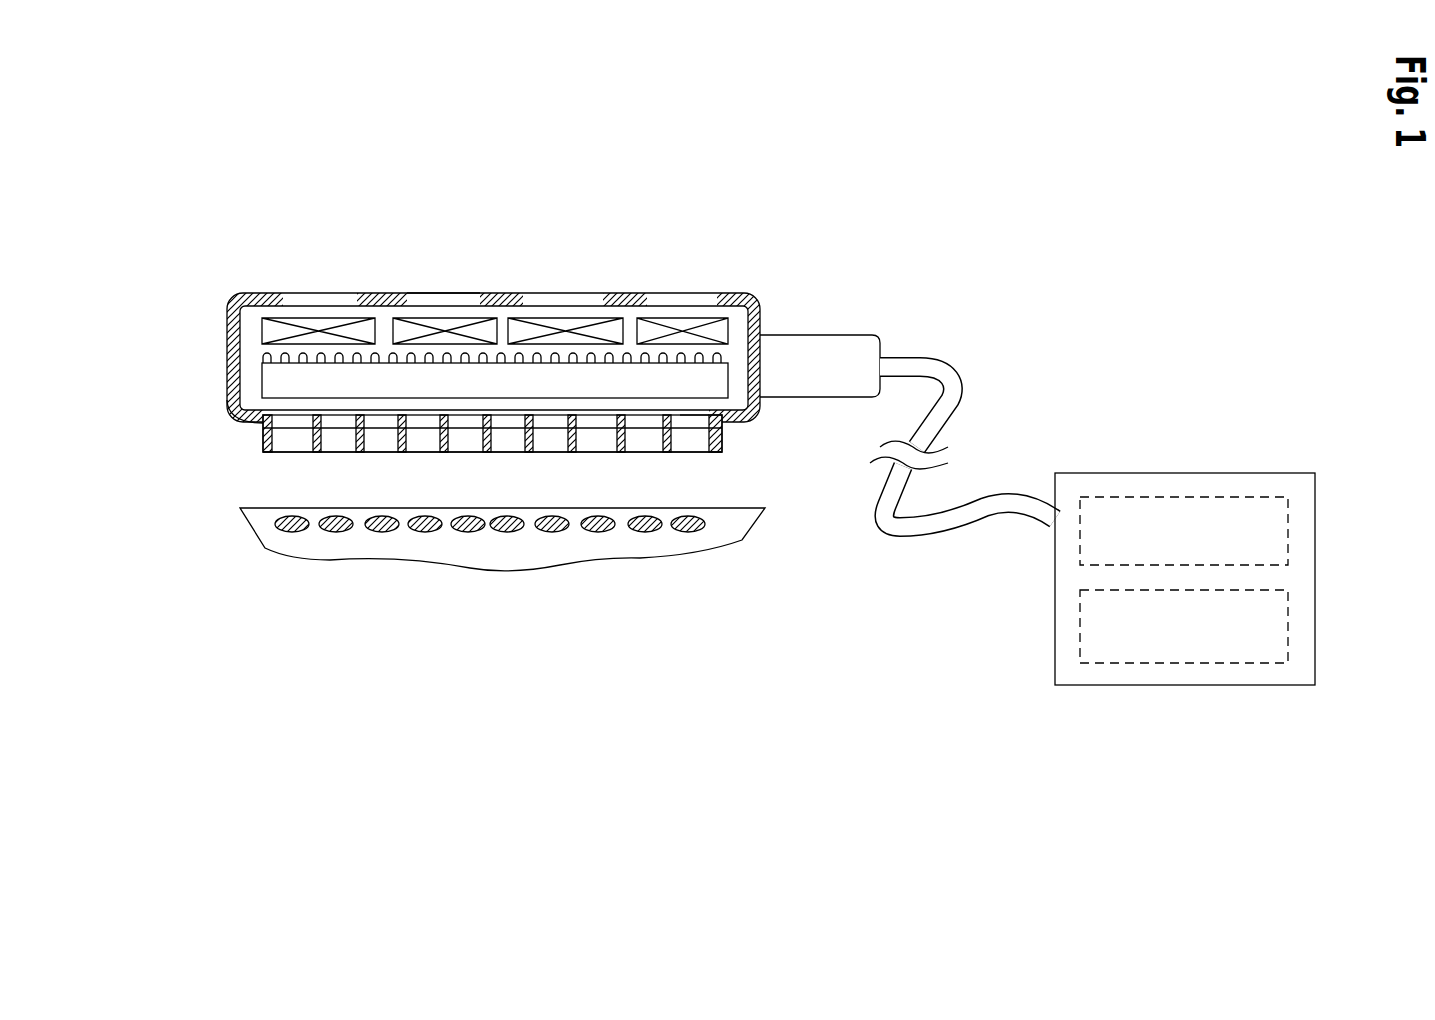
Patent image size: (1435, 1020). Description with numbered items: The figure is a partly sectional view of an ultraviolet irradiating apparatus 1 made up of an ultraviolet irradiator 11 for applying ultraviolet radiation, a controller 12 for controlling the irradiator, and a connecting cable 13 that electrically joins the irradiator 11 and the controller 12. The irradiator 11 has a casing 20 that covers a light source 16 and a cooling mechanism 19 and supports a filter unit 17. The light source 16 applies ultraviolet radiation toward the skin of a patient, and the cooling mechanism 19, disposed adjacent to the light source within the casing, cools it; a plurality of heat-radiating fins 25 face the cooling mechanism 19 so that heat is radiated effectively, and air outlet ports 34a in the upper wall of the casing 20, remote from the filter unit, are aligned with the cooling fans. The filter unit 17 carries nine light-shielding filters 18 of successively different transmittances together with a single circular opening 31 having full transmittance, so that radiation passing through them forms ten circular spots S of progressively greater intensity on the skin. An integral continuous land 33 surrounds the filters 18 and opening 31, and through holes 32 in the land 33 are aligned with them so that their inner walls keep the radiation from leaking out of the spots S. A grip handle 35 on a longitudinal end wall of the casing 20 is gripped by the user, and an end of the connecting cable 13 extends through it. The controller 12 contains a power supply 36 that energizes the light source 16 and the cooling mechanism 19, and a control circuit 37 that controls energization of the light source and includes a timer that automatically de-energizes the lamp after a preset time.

The ultraviolet irradiating apparatus 1 is at (1162, 833).
The ultraviolet irradiator 11 is at (737, 247).
The controller 12 is at (1190, 470).
The connecting cable 13 is at (950, 385).
The light source 16 is at (290, 383).
The filter unit 17 is at (235, 420).
The light-shielding filters 18 is at (510, 430).
The cooling mechanism 19 is at (574, 323).
The casing 20 is at (227, 318).
The heat-radiating fins 25 is at (742, 358).
The opening 31 is at (695, 428).
The through holes 32 is at (350, 440).
The land 33 is at (576, 430).
The air outlet ports 34a is at (413, 291).
The grip handle 35 is at (835, 345).
The power supply 36 is at (1118, 497).
The control circuit 37 is at (1203, 665).
The spots S is at (700, 518).